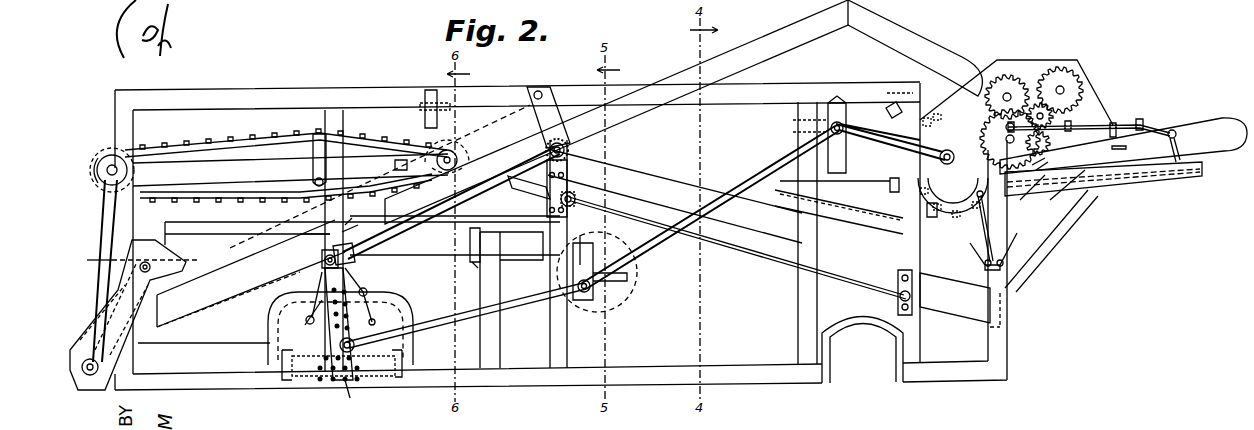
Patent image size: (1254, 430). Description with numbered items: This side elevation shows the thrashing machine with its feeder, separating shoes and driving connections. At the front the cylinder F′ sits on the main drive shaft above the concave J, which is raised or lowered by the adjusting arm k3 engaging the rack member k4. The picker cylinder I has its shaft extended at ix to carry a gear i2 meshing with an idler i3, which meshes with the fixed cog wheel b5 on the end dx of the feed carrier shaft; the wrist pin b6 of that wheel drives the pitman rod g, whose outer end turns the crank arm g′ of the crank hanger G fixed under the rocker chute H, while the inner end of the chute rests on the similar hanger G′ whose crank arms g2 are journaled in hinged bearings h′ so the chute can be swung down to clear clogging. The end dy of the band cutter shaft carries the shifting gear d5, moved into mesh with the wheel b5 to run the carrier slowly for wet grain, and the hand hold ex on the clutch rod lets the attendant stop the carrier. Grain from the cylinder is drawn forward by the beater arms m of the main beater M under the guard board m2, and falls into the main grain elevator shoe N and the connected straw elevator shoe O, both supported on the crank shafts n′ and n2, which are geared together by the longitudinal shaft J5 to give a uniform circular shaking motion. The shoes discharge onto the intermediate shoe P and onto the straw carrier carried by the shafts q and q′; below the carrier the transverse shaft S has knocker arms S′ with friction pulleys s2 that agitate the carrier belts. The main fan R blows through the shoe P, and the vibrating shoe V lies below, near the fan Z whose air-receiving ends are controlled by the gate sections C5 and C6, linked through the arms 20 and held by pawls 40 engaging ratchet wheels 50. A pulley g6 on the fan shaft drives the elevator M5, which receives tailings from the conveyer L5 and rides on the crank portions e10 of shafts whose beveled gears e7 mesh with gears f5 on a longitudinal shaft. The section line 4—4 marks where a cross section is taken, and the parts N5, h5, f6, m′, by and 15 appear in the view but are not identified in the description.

The inclined frame beam N5 is at (616, 112).
The cylinder F′ is at (945, 75).
The straw carrier shaft q′ is at (128, 172).
The straw carrier shaft q is at (436, 163).
The transverse shaft S is at (312, 168).
The knocker arm S′ is at (315, 188).
The friction pulley s2 is at (394, 165).
The bolt bracket h5 is at (424, 112).
The conveyer L5 is at (80, 330).
The elevator M5 is at (190, 278).
The vibrating shoe V is at (228, 303).
The intermediate vibrating shoe P is at (360, 245).
The section line 4 is at (468, 262).
The beveled gear e7 is at (548, 151).
The crank portion e10 is at (323, 256).
The beveled gear f5 is at (566, 143).
The crank shaft n2 is at (574, 195).
The rod f6 is at (351, 222).
The straw elevator shoe O is at (675, 196).
The longitudinal shaft J5 is at (748, 245).
The beater arm m is at (714, 192).
The guard board m2 is at (887, 105).
The pawl m′ is at (886, 110).
The main beater M is at (895, 144).
The picker cylinder I is at (840, 203).
The lug by is at (922, 121).
The main fan R is at (596, 292).
The fan Z is at (338, 343).
The gate section C5 is at (308, 312).
The gate section C6 is at (378, 312).
The arm 20 is at (318, 288).
The pin 15 is at (308, 316).
The pawl 40 is at (368, 290).
The ratchet wheel 50 is at (356, 256).
The pulley g6 is at (353, 398).
The crank shaft n′ is at (896, 296).
The main grain elevator shoe N is at (960, 300).
The rack member k4 is at (982, 258).
The adjusting arm k3 is at (983, 230).
The shaft end dx is at (953, 191).
The concave J is at (945, 218).
The shifting gear d5 is at (1007, 92).
The shaft end dy is at (1010, 95).
The gear i2 is at (1062, 88).
The shaft extension ix is at (1066, 90).
The idler i3 is at (1052, 113).
The wrist pin b6 is at (1000, 125).
The fixed cog wheel b5 is at (1028, 150).
The hinged bearing h′ is at (1046, 164).
The pitman rod g is at (1085, 127).
The crank arm g′ is at (1178, 134).
The hand hold ex is at (1107, 147).
The crank hanger G is at (1170, 178).
The crank hanger G′ is at (1058, 194).
The crank arm g2 is at (1026, 197).
The rocker trough or chute H is at (1105, 222).